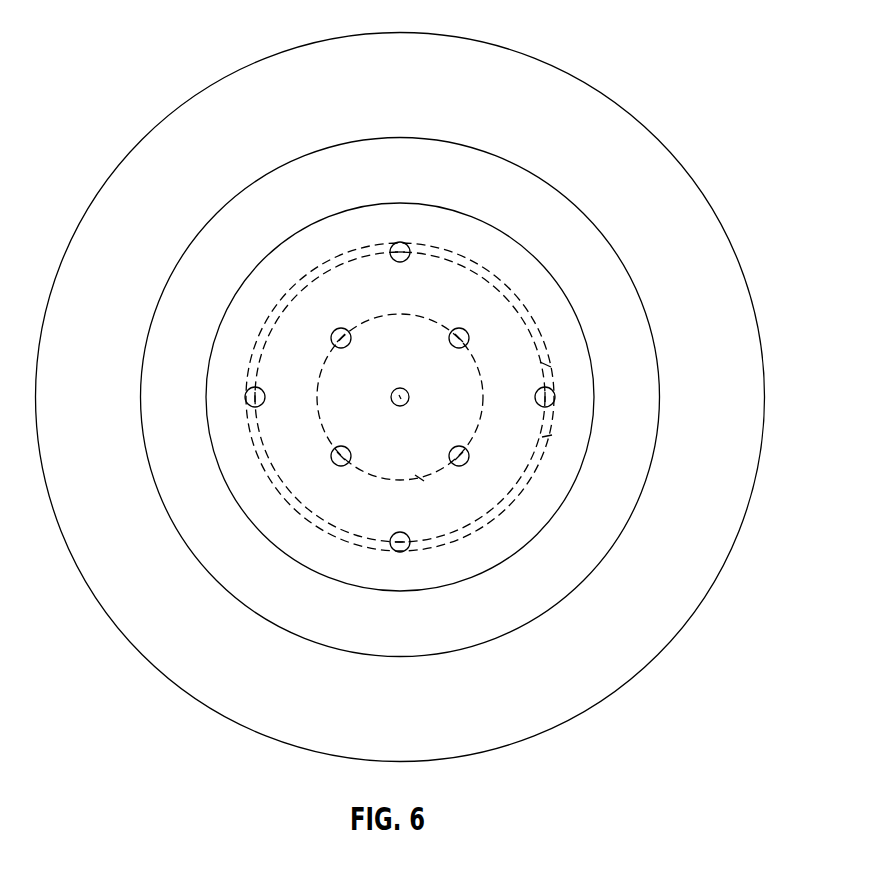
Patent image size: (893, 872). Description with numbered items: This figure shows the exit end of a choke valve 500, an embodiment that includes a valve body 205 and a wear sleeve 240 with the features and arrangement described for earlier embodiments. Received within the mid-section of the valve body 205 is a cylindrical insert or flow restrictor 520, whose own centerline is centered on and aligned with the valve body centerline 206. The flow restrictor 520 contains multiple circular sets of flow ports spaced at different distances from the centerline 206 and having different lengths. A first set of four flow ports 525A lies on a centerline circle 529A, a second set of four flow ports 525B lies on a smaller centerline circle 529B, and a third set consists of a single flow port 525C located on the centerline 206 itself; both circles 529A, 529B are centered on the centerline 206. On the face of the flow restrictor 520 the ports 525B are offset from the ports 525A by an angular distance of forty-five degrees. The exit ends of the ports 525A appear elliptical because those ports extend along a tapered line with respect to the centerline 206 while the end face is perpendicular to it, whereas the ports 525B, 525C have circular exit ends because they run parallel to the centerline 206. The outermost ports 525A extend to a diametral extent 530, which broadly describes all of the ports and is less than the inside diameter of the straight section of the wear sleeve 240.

The choke valve 500 is at (675, 41).
The valve body 205 is at (118, 230).
The wear sleeve 240 is at (163, 343).
The flow restrictor 520 is at (217, 377).
The diametral extent 530 is at (487, 273).
The centerline circle 529A is at (546, 365).
The centerline circle 529B is at (420, 478).
The first set of flow ports 525A is at (399, 243).
The second set of flow ports 525B is at (342, 465).
The flow port 525C is at (397, 407).
The centerline 206 is at (398, 389).